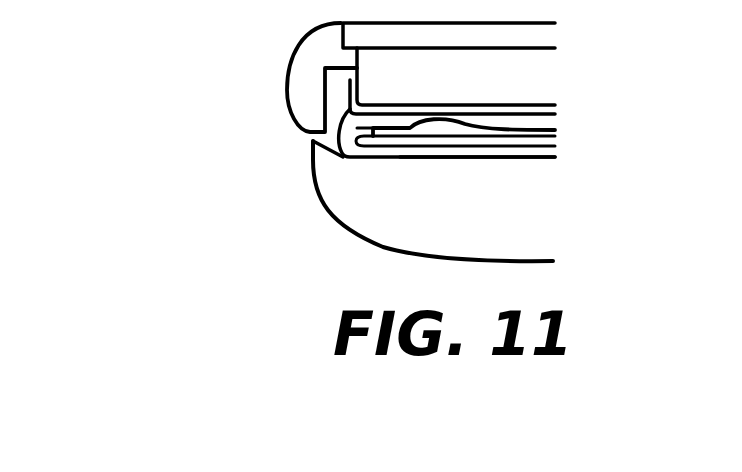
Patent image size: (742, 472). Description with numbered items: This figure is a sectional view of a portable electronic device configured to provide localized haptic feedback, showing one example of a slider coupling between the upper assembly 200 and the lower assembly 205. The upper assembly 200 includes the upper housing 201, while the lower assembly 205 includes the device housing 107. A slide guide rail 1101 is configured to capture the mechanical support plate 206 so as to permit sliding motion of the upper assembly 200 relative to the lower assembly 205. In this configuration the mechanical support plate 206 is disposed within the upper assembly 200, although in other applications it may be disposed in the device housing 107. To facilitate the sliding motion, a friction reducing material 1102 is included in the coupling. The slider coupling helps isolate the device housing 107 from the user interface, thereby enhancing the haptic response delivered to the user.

The upper assembly 200 is at (582, 65).
The upper housing 201 is at (307, 68).
The mechanical support plate 206 is at (553, 138).
The slide guide rail 1101 is at (532, 150).
The friction reducing material 1102 is at (340, 140).
The device housing 107 is at (425, 212).
The lower assembly 205 is at (590, 208).